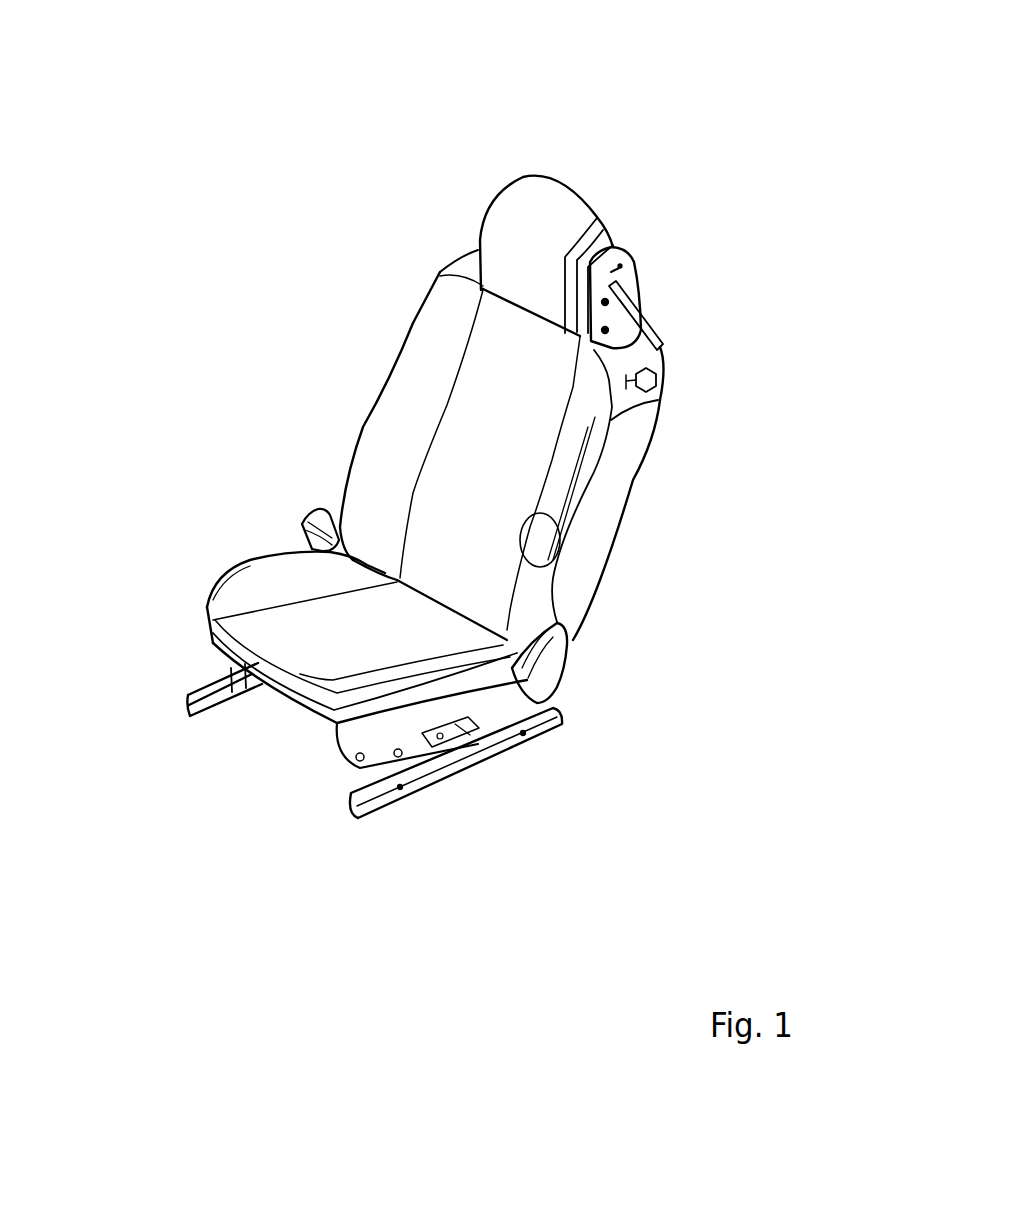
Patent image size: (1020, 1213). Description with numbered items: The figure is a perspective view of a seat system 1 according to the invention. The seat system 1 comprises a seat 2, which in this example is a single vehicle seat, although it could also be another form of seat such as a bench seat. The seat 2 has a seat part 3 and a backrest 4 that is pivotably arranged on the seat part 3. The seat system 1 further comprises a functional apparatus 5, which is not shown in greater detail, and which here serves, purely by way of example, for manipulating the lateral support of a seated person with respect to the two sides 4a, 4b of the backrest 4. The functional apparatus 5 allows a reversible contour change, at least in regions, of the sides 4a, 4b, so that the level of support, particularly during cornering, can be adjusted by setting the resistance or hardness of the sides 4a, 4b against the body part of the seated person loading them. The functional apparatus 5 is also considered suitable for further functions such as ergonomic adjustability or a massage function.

The seat system 1 is at (292, 196).
The seat 2 is at (352, 404).
The seat part 3 is at (318, 655).
The backrest 4 is at (512, 467).
The side of the backrest 4a is at (417, 385).
The side of the backrest 4b is at (556, 571).
The functional apparatus 5 is at (257, 481).